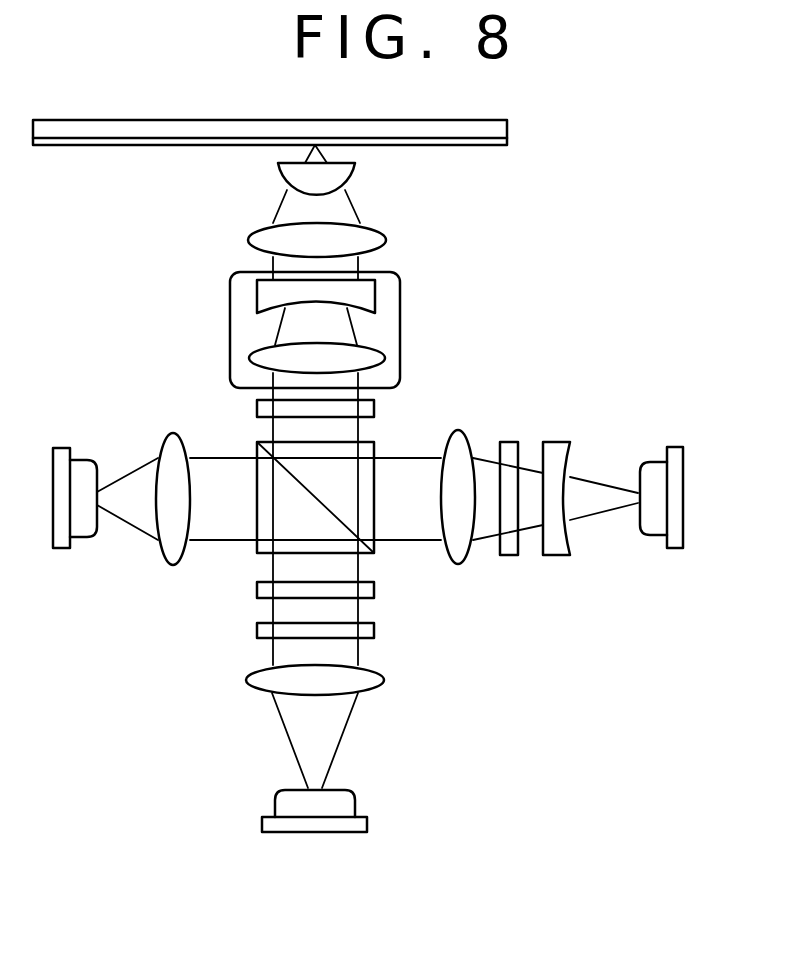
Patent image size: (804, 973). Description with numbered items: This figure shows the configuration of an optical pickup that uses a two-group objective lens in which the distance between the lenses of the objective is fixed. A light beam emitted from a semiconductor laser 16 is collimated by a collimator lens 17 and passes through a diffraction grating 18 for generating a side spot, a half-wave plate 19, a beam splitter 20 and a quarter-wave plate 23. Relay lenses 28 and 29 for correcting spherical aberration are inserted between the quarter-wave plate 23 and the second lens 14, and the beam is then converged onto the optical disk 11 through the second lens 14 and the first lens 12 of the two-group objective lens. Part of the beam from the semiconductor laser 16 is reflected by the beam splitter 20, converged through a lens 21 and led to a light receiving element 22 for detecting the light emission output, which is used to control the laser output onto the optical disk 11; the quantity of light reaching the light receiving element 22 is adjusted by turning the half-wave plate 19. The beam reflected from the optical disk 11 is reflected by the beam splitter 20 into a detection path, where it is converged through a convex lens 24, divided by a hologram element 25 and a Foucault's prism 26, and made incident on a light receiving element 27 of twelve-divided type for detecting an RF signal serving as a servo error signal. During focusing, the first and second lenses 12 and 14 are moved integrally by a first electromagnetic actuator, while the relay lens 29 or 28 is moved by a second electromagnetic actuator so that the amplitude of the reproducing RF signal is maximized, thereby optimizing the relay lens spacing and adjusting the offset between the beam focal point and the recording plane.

The optical disk 11 is at (130, 145).
The first lens 12 is at (338, 172).
The second lens 14 is at (368, 240).
The semiconductor laser 16 is at (367, 825).
The collimator lens 17 is at (365, 680).
The diffraction grating 18 is at (374, 630).
The half-wave plate 19 is at (374, 590).
The beam splitter 20 is at (258, 445).
The lens 21 is at (170, 565).
The light receiving element 22 is at (62, 548).
The quarter-wave plate 23 is at (374, 405).
The convex lens 24 is at (458, 553).
The hologram element 25 is at (508, 442).
The Foucault's prism 26 is at (553, 555).
The light receiving element 27 is at (672, 447).
The relay lens 28 is at (383, 358).
The relay lens 29 is at (375, 292).